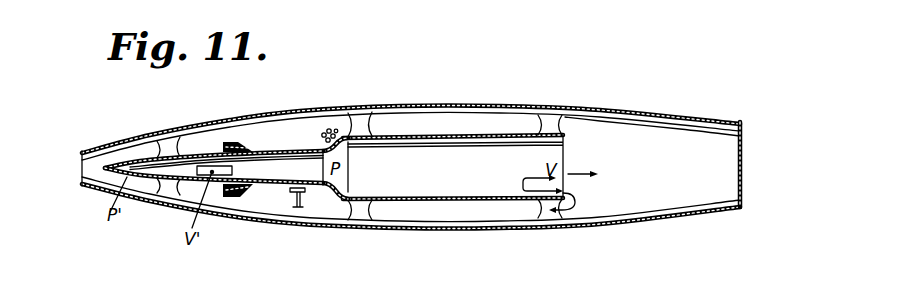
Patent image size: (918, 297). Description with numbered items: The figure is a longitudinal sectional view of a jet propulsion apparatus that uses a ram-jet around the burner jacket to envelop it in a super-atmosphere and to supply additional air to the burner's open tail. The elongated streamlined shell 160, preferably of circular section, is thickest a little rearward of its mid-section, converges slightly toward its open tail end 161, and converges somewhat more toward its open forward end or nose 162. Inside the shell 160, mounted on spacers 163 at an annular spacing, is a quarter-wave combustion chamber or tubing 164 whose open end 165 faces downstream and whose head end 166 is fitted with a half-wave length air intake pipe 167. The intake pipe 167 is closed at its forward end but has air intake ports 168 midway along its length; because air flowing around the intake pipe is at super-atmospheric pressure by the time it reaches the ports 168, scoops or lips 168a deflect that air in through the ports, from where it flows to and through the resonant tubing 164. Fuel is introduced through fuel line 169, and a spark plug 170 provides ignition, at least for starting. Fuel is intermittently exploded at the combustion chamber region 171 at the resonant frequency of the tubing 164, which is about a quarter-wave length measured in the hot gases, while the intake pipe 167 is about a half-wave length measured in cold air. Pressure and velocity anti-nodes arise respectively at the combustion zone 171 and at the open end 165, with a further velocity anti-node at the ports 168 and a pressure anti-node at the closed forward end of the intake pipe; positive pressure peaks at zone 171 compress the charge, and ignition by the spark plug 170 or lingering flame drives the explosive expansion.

The elongated streamlined shell 160 is at (492, 234).
The open tail end 161 is at (740, 153).
The open forward end or nose 162 is at (82, 160).
The spacers 163 is at (360, 118).
The quarter-wave combustion chamber or tubing 164 is at (460, 135).
The open end 165 is at (567, 134).
The head end 166 is at (345, 200).
The half-wave length air intake pipe 167 is at (272, 184).
The air intake ports 168 is at (210, 163).
The scoops or lips 168a is at (240, 143).
The fuel line 169 is at (293, 207).
The spark plug 170 is at (325, 132).
The combustion chamber region 171 is at (343, 181).